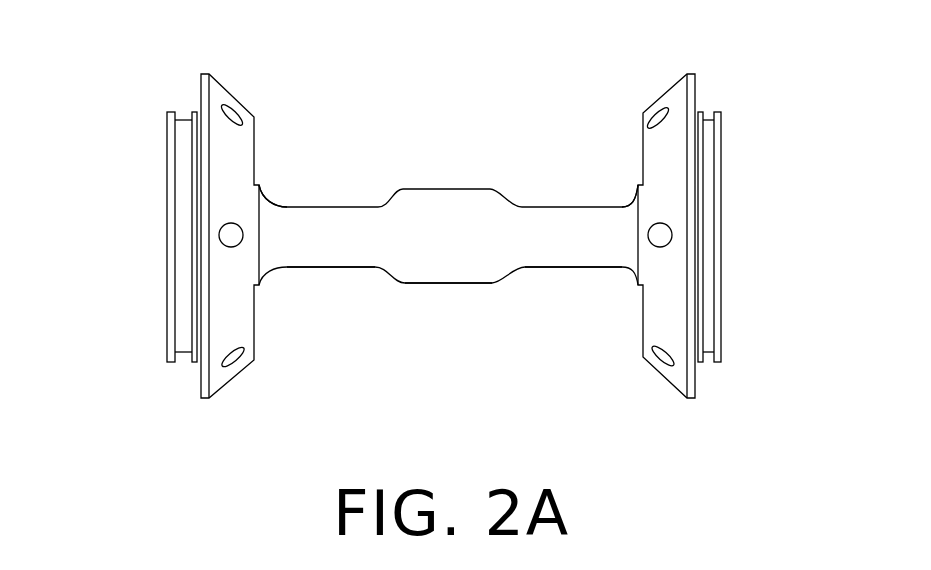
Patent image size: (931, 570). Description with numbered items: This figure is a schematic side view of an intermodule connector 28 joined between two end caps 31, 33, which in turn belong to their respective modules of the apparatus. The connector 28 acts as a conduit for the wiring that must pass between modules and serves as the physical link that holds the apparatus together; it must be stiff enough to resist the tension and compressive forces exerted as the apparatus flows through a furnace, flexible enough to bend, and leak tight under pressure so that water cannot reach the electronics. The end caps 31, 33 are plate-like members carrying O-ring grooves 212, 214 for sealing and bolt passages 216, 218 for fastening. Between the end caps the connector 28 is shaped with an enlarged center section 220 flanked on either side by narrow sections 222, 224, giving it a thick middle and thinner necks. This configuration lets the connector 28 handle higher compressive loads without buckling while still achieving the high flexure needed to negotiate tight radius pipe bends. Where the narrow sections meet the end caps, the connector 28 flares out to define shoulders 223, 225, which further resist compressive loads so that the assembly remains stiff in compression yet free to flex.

The intermodule connector 28 is at (430, 158).
The end cap 31 is at (690, 70).
The end cap 33 is at (233, 83).
The O-ring groove 212 is at (707, 115).
The O-ring groove 214 is at (183, 112).
The bolt passage 216 is at (660, 358).
The bolt passage 218 is at (237, 367).
The enlarged center section 220 is at (453, 287).
The narrow section 222 is at (584, 271).
The shoulder 223 is at (628, 193).
The narrow section 224 is at (317, 270).
The shoulder 225 is at (268, 178).